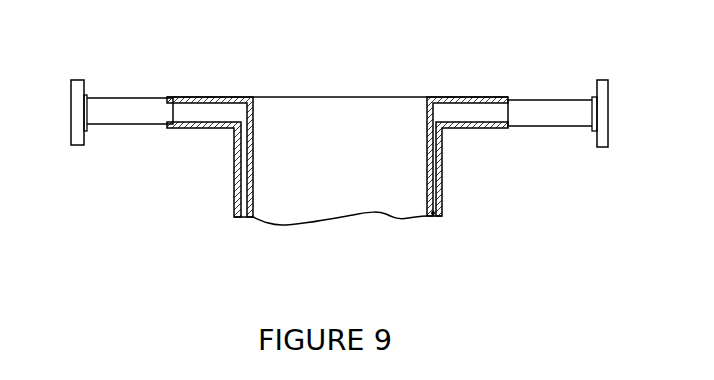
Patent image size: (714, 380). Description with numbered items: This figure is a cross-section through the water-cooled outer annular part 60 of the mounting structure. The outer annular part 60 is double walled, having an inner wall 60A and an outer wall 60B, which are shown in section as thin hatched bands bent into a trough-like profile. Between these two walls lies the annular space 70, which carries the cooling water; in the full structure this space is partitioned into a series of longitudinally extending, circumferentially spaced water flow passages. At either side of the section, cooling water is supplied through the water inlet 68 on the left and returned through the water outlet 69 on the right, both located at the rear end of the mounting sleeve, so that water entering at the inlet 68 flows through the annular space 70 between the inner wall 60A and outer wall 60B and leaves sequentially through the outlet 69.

The water inlet 68 is at (116, 107).
The water outlet 69 is at (542, 107).
The outer annular part 60 is at (477, 154).
The inner wall 60A is at (443, 180).
The outer wall 60B is at (424, 170).
The annular space 70 is at (434, 215).